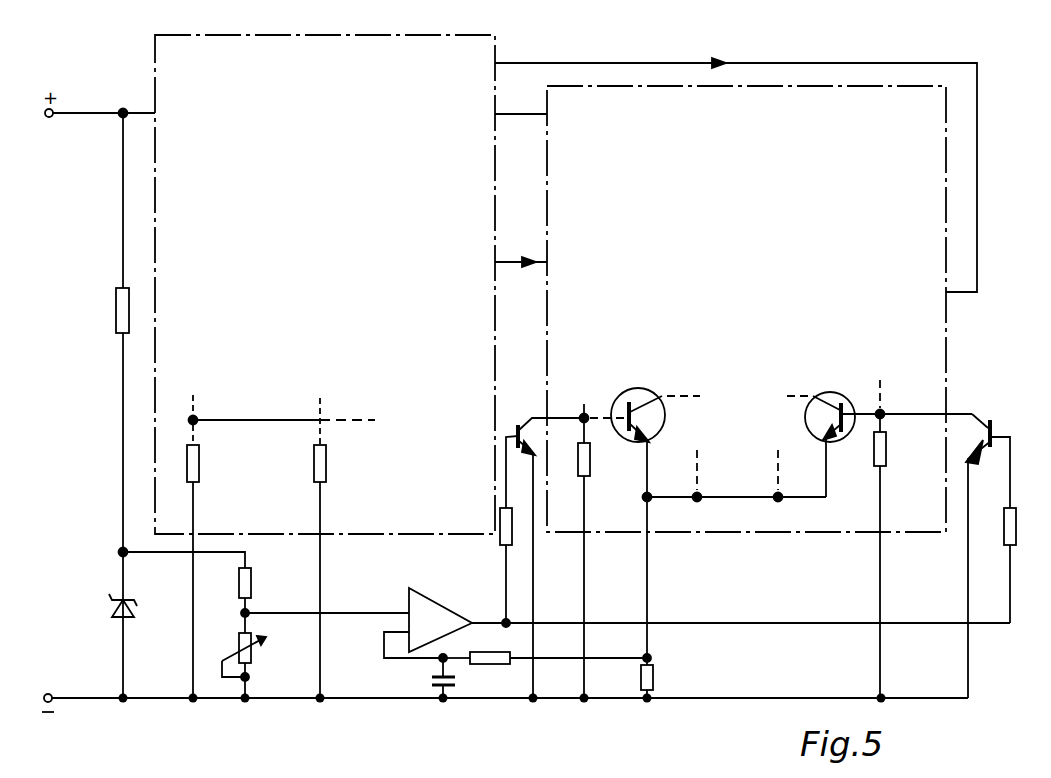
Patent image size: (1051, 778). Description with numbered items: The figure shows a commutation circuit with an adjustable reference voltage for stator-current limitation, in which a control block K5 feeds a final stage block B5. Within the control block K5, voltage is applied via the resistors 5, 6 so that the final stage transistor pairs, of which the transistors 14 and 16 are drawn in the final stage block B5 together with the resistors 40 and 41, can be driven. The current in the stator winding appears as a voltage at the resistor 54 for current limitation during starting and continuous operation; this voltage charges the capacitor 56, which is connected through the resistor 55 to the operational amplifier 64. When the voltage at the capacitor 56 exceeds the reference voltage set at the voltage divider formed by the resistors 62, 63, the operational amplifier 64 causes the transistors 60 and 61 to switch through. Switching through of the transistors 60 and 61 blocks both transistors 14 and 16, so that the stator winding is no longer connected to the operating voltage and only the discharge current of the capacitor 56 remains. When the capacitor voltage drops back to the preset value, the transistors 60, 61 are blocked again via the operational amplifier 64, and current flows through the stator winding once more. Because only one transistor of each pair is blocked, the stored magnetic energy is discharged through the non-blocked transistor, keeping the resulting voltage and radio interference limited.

The comparator / control circuit K5 (=K2) K5 is at (333, 36).
The output stage B5 (=B2) B5 is at (740, 86).
The resistor 5 is at (199, 463).
The resistor 6 is at (326, 466).
The final stage transistor 14 is at (645, 409).
The final stage transistor 16 is at (877, 439).
The resistor 40 is at (597, 551).
The resistor 41 is at (893, 539).
The resistor 54 is at (661, 569).
The feedback resistor 55 is at (545, 673).
The capacitor 56 is at (440, 666).
The transistor 60 is at (997, 555).
The transistor 61 is at (532, 418).
The voltage divider resistor 62 is at (251, 588).
The voltage divider resistor 63 is at (252, 662).
The operational amplifier 64 is at (627, 623).